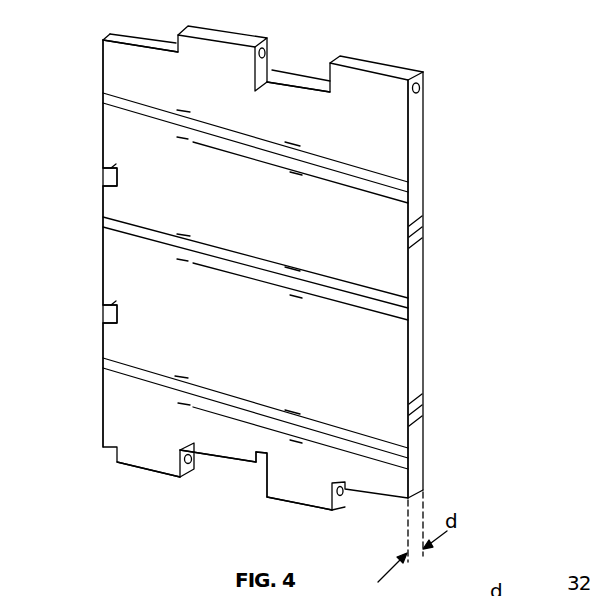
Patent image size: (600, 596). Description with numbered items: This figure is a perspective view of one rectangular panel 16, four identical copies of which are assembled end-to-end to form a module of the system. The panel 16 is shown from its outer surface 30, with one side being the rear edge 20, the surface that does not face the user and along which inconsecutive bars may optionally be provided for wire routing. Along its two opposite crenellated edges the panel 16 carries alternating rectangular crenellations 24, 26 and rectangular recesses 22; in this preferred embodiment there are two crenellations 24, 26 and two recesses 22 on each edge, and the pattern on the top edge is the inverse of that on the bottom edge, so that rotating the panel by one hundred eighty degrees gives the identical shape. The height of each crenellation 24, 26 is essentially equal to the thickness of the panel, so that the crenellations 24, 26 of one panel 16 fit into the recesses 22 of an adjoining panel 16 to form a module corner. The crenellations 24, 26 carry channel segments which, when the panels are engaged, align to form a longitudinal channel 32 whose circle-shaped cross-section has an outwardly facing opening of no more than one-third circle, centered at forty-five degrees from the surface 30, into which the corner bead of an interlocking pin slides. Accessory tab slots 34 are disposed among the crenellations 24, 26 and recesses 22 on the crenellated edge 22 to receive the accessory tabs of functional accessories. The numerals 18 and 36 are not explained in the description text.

The rectangular panel 16 is at (104, 401).
The side edge of panel 18 is at (414, 330).
The rear edge 20 is at (103, 256).
The recess 22 is at (294, 78).
The crenellation 24 is at (203, 52).
The crenellation 26 is at (357, 87).
The outer surface 30 is at (278, 228).
The longitudinal channel 32 is at (421, 88).
The accessory tab slot 34 is at (262, 463).
The notch 36 is at (103, 177).